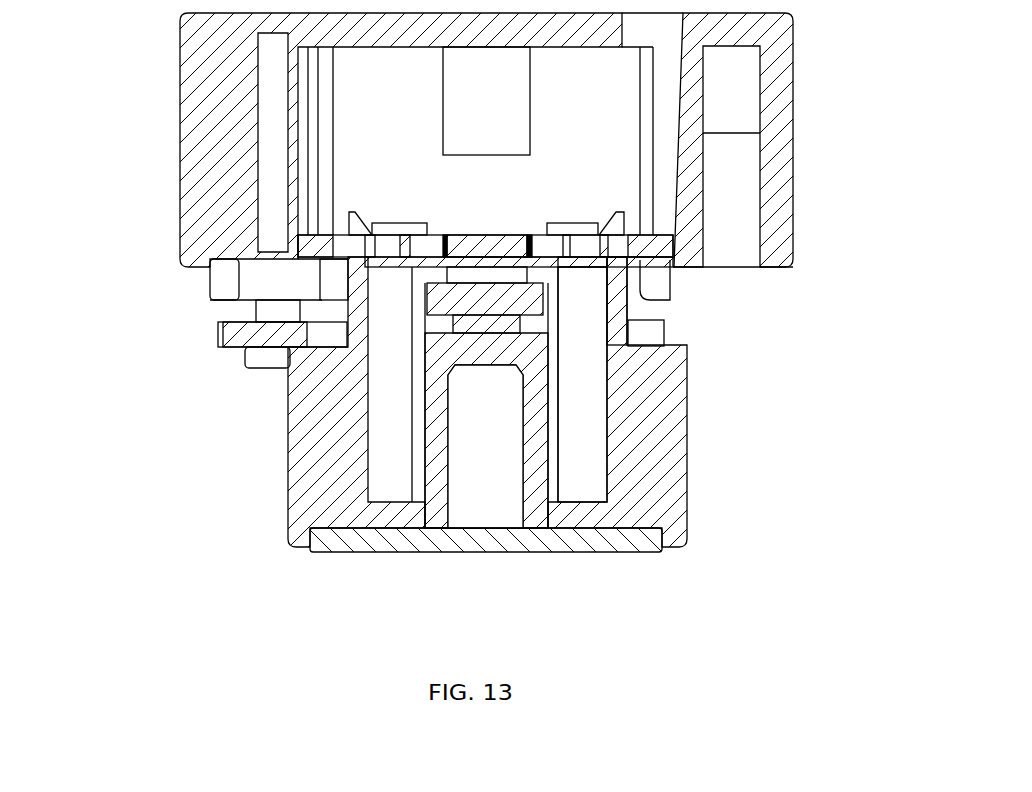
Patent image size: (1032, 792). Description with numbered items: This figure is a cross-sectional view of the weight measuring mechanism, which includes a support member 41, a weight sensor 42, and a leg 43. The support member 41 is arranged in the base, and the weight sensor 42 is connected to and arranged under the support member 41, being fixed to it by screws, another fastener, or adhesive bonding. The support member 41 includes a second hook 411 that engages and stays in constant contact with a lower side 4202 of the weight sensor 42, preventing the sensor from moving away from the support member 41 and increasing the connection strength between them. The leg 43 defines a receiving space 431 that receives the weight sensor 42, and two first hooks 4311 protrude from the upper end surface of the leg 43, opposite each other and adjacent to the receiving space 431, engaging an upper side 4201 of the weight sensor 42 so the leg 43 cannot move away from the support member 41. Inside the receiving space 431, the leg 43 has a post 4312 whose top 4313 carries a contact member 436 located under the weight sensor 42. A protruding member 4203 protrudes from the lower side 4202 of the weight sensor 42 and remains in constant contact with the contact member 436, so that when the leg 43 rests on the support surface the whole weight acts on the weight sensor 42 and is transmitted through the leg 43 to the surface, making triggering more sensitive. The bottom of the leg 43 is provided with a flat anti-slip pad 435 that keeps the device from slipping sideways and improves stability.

The support member 41 is at (220, 120).
The second hook 411 is at (645, 268).
The upper side 4201 is at (483, 235).
The weight sensor 42 is at (463, 237).
The first hooks 4311 is at (352, 214).
The leg 43 is at (650, 432).
The receiving space 431 is at (628, 302).
The lower side 4202 is at (572, 297).
The protruding member 4203 is at (540, 297).
The top 4313 is at (440, 313).
The contact member 436 is at (473, 325).
The post 4312 is at (533, 428).
The anti-slip pad 435 is at (520, 547).